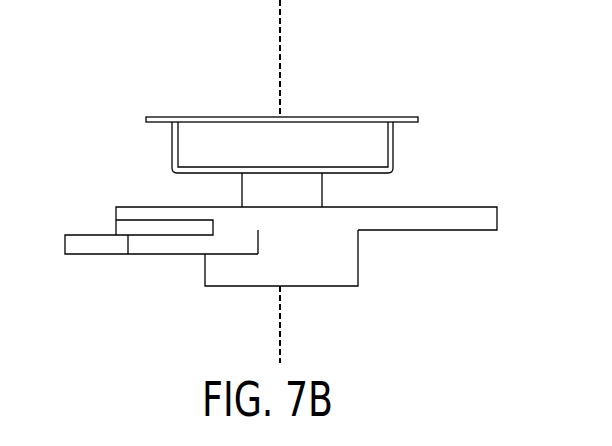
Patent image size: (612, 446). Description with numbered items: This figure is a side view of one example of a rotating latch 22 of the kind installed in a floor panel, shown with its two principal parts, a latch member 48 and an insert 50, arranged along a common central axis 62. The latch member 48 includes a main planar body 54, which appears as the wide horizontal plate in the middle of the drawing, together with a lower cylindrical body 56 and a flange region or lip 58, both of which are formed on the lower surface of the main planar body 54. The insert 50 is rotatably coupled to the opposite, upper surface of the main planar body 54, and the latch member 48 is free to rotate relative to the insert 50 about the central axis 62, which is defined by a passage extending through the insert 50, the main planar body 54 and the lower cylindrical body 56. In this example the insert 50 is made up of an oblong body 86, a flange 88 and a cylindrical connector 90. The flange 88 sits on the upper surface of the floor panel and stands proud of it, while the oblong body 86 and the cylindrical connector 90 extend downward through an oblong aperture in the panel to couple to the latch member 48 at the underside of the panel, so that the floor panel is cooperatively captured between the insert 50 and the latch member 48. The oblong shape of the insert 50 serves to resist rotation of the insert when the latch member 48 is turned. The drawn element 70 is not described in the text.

The rotating latch 22 is at (138, 103).
The latch member 48 is at (455, 260).
The insert 50 is at (447, 115).
The main planar body 54 is at (135, 213).
The lower cylindrical body 56 is at (335, 276).
The flange region or lip 58 is at (96, 252).
The central axis 62 is at (287, 30).
The body plate 70 is at (487, 207).
The oblong body 86 is at (388, 152).
The flange 88 is at (398, 117).
The cylindrical connector 90 is at (318, 201).